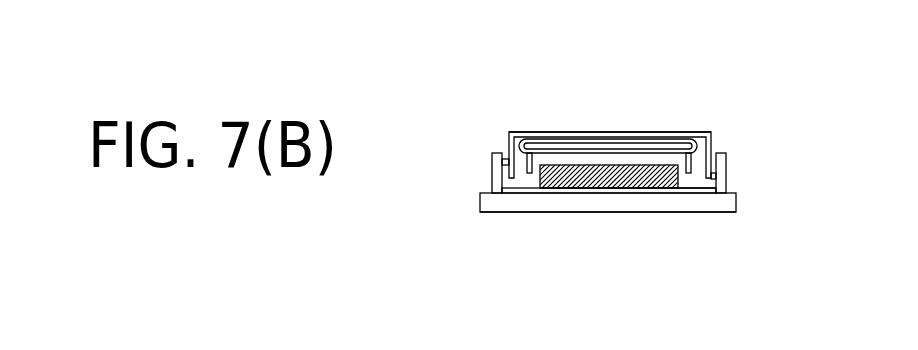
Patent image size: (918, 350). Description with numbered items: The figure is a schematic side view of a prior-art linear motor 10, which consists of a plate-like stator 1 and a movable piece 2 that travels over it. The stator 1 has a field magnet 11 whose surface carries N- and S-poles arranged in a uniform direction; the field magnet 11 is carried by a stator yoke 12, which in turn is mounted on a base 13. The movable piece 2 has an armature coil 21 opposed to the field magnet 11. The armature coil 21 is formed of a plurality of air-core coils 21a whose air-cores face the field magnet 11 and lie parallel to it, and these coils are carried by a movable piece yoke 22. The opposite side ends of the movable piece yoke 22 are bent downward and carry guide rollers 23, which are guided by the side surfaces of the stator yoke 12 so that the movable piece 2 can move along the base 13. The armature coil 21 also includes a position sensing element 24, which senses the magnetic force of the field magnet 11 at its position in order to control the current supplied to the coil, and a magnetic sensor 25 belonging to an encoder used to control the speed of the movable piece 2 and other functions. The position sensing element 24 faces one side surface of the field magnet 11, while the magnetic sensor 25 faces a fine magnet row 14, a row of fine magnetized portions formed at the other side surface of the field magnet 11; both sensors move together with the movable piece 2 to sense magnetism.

The stator 1 is at (612, 221).
The movable piece 2 is at (588, 99).
The acceleration sensor 10 is at (484, 92).
The field magnet 11 is at (647, 182).
The stator yoke 12 is at (557, 190).
The base 13 is at (510, 203).
The fine magnet row 14 is at (677, 178).
The armature coil 21 is at (655, 131).
The air-core coil 21a is at (568, 146).
The movable piece yoke 22 is at (690, 131).
The guide roller 23 is at (491, 162).
The position sensing element 24 is at (523, 158).
The magnetic sensor 25 is at (688, 190).